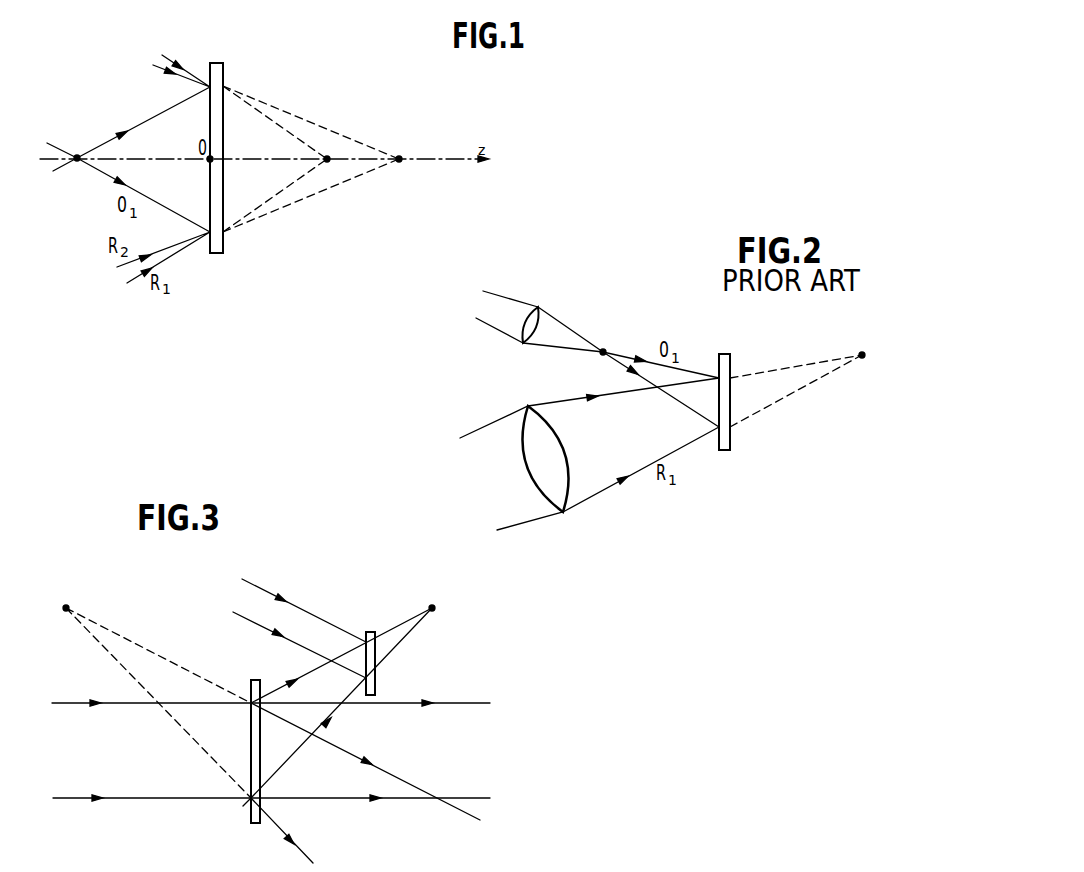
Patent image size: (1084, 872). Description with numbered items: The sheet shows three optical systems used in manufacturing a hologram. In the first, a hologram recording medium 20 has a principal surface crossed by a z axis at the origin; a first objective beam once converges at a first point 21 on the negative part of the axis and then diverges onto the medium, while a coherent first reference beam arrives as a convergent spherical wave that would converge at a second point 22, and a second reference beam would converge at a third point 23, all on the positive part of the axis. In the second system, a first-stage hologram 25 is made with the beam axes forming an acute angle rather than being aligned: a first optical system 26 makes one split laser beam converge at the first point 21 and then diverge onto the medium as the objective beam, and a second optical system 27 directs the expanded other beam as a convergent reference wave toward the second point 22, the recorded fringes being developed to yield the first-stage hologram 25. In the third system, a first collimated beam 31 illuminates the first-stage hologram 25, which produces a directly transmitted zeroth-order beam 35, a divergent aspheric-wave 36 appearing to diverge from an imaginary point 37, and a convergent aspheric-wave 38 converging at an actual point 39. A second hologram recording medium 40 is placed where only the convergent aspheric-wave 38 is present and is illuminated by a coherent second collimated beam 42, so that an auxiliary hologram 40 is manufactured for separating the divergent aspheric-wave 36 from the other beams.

In FIG. 1, the hologram recording medium 20 is at (223, 252).
In FIG. 1, the first point 21 is at (80, 156).
In FIG. 2, the first point 21 is at (604, 352).
In FIG. 1, the second point 22 is at (322, 158).
In FIG. 2, the second point 22 is at (863, 355).
In FIG. 1, the third point 23 is at (399, 159).
In FIG. 2, the first-stage hologram 25 is at (730, 443).
In FIG. 3, the first-stage hologram 25 is at (251, 818).
In FIG. 2, the first optical system 26 is at (541, 318).
In FIG. 2, the second optical system 27 is at (532, 475).
In FIG. 3, the first collimated beam 31 is at (105, 704).
In FIG. 3, the directly transmitted beam 35 is at (478, 702).
In FIG. 3, the divergent aspheric-wave 36 is at (462, 815).
In FIG. 3, the imaginary point 37 is at (63, 611).
In FIG. 3, the convergent aspheric-wave 38 is at (288, 683).
In FIG. 3, the actual point 39 is at (434, 607).
In FIG. 3, the second hologram recording medium 40 is at (376, 690).
In FIG. 3, the second collimated beam 42 is at (250, 620).